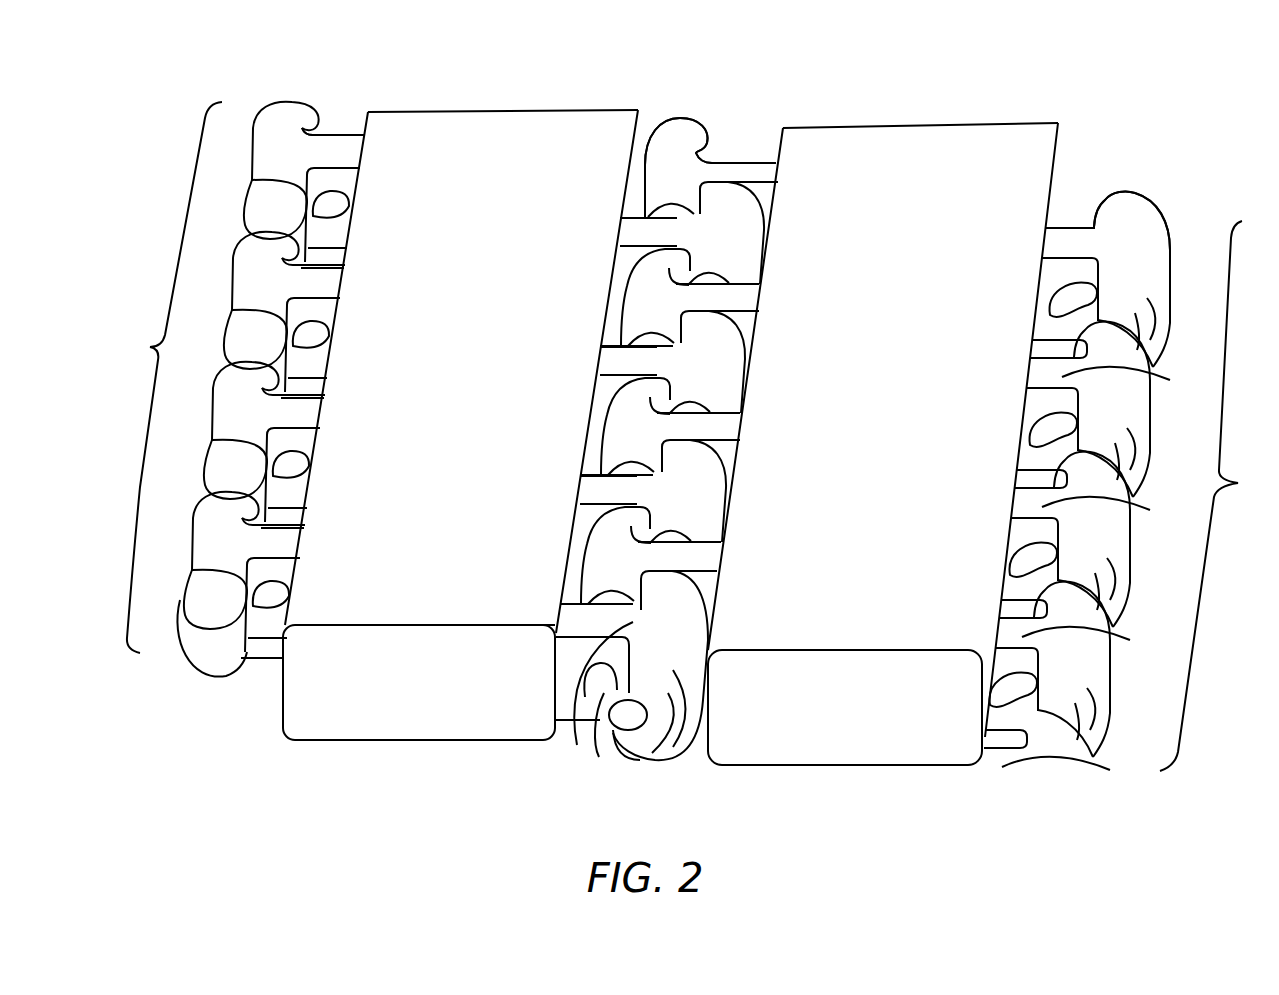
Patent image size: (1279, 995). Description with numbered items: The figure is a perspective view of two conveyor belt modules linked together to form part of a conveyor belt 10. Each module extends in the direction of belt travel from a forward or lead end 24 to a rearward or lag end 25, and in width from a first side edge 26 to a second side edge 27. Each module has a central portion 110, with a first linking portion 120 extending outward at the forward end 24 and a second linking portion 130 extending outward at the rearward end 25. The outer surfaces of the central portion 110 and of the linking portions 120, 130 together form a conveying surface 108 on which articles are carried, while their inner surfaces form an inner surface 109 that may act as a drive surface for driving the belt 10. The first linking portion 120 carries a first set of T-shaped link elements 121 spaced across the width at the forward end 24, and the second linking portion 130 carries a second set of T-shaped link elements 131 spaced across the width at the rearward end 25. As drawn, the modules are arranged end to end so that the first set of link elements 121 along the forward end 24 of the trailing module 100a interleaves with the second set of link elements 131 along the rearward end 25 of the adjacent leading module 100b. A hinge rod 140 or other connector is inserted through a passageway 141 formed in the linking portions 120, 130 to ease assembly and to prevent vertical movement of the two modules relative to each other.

The conveyor belt 10 is at (718, 75).
The forward end 24 is at (650, 118).
The rearward end 25 is at (324, 118).
The first side edge 26 is at (371, 690).
The second side edge 27 is at (404, 96).
The trailing module 100a is at (922, 100).
The leading module 100b is at (508, 95).
The conveying surface 108 is at (552, 606).
The inner surface 109 is at (355, 742).
The central portion 110 is at (433, 408).
The first linking portion 120 is at (672, 750).
The first set of T-shaped link elements 121 is at (1025, 793).
The second linking portion 130 is at (708, 40).
The second set of T-shaped link elements 131 is at (768, 103).
The hinge rod 140 is at (617, 740).
The passageway 141 is at (599, 757).